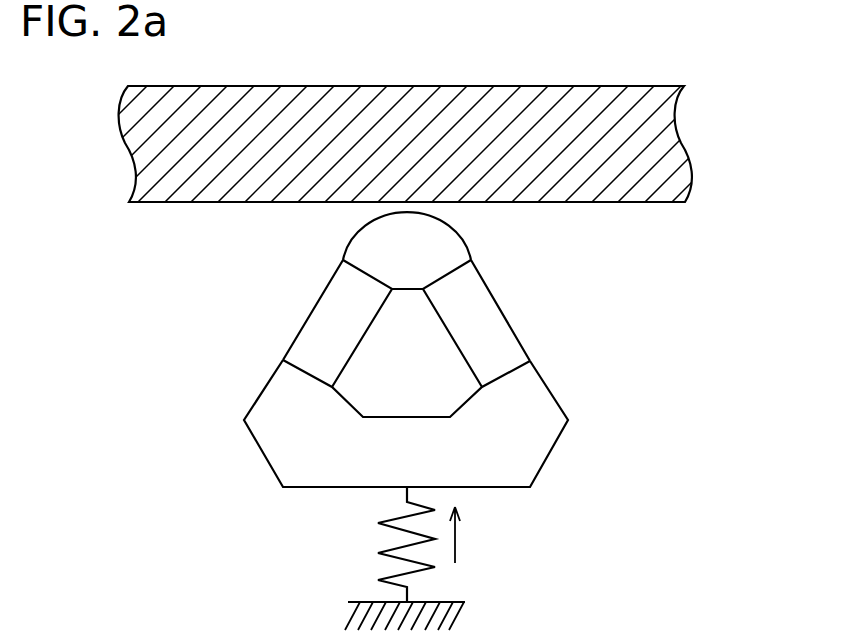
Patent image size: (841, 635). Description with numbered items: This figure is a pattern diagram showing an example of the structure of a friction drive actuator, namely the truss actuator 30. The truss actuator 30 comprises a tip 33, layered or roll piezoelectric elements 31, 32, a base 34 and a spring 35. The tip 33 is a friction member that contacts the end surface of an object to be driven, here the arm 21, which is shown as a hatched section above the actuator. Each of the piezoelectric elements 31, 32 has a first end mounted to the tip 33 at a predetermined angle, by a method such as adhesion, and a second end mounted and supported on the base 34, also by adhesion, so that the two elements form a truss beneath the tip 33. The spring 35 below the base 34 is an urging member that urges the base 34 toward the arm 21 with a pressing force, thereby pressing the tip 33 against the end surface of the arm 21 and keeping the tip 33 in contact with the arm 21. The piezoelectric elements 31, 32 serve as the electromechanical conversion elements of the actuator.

The arm 21 is at (690, 140).
The truss actuator 30 is at (478, 421).
The piezoelectric element 31 is at (323, 291).
The piezoelectric element 32 is at (484, 275).
The tip 33 is at (465, 233).
The base 34 is at (530, 487).
The spring 35 is at (372, 553).